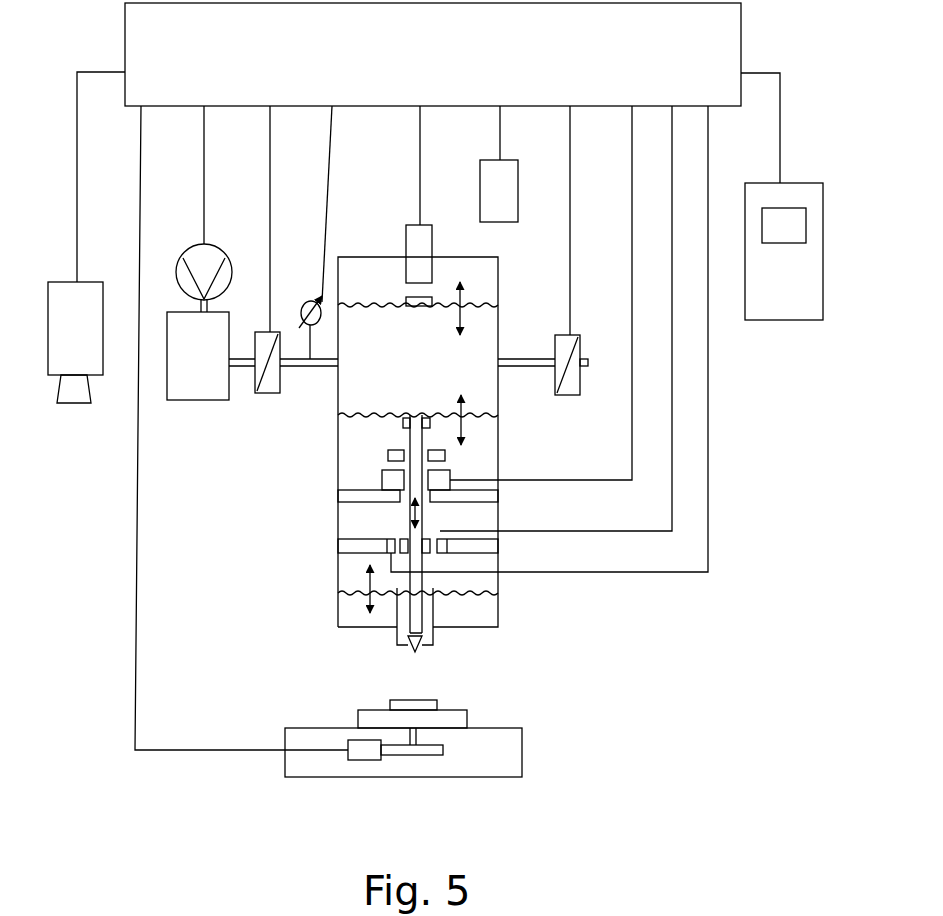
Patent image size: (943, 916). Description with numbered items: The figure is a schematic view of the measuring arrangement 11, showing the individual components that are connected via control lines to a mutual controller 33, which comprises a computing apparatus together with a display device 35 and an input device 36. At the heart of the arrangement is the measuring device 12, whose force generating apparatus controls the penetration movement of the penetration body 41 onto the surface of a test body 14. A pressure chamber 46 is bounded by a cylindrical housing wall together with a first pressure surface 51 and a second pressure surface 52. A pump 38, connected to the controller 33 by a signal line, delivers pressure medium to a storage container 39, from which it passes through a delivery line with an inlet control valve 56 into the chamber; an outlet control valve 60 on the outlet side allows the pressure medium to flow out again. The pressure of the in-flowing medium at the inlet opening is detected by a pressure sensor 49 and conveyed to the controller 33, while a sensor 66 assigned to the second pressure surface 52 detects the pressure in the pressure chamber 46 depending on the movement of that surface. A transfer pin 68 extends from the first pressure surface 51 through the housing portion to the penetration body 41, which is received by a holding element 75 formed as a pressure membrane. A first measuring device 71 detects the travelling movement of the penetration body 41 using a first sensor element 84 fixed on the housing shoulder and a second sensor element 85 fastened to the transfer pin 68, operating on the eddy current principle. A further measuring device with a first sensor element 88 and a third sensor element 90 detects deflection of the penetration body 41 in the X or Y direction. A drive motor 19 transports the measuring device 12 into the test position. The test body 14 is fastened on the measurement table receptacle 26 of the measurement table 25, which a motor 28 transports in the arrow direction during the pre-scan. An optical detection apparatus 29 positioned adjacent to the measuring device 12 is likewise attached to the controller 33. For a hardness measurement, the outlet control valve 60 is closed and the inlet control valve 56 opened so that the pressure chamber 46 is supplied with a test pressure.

The controller 33 is at (438, 75).
The optical detection apparatus 29 is at (89, 341).
The pump 38 is at (211, 258).
The storage container 39 is at (211, 370).
The inlet control valve 56 is at (268, 398).
The pressure sensor 49 is at (304, 284).
The sensor 66 is at (391, 233).
The drive motor 19 is at (512, 205).
The measuring device 12 is at (320, 556).
The second pressure surface 52 is at (485, 297).
The pressure chamber 46 is at (487, 334).
The first pressure surface 51 is at (340, 415).
The outlet control valve 60 is at (567, 398).
The display device 35 is at (781, 302).
The input device 36 is at (782, 323).
The transfer pin 68 is at (418, 437).
The first sensor element 84 is at (445, 453).
The first measuring device 71 is at (372, 466).
The second sensor element 85 is at (388, 478).
The first sensor element 88 is at (390, 538).
The third sensor element 90 is at (438, 566).
The holding element 75 is at (341, 600).
The penetration body 41 is at (380, 646).
The measuring arrangement 11 is at (669, 629).
The measurement table 25 is at (500, 766).
The measurement table receptacle 26 is at (467, 719).
The test body 14 is at (438, 708).
The motor 28 is at (361, 756).